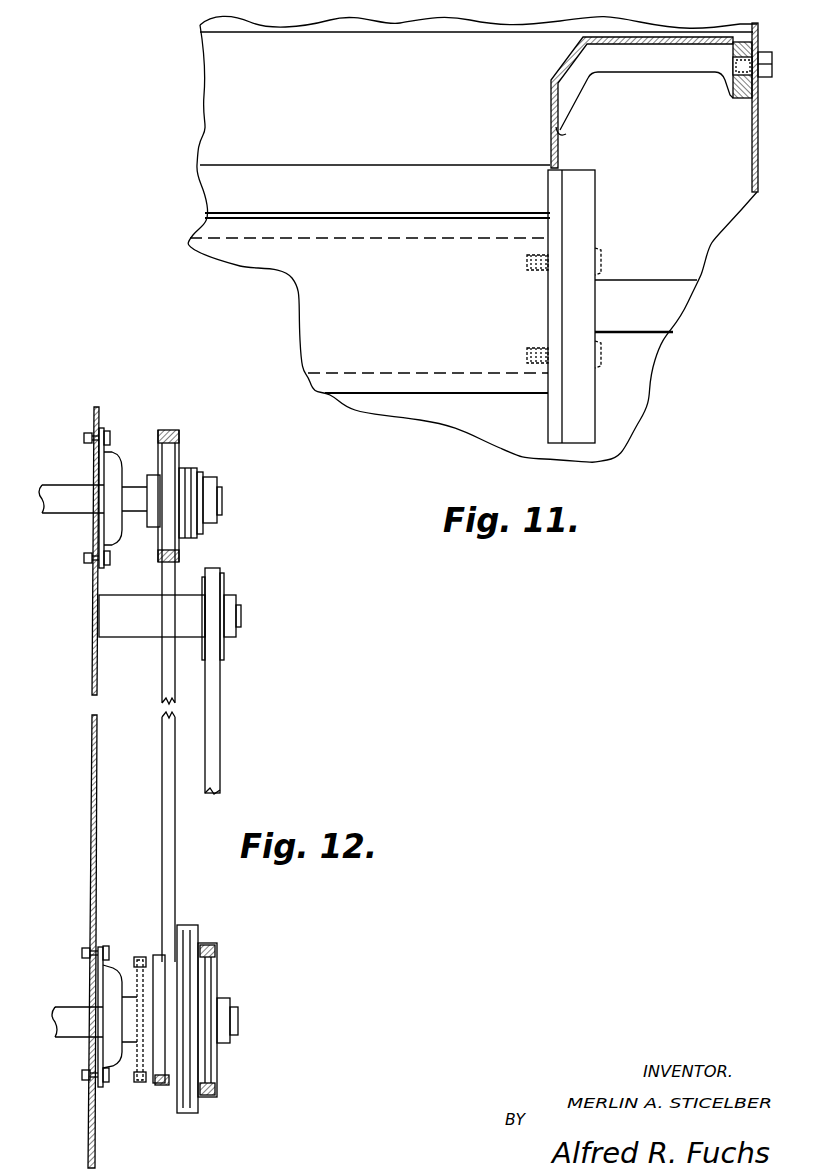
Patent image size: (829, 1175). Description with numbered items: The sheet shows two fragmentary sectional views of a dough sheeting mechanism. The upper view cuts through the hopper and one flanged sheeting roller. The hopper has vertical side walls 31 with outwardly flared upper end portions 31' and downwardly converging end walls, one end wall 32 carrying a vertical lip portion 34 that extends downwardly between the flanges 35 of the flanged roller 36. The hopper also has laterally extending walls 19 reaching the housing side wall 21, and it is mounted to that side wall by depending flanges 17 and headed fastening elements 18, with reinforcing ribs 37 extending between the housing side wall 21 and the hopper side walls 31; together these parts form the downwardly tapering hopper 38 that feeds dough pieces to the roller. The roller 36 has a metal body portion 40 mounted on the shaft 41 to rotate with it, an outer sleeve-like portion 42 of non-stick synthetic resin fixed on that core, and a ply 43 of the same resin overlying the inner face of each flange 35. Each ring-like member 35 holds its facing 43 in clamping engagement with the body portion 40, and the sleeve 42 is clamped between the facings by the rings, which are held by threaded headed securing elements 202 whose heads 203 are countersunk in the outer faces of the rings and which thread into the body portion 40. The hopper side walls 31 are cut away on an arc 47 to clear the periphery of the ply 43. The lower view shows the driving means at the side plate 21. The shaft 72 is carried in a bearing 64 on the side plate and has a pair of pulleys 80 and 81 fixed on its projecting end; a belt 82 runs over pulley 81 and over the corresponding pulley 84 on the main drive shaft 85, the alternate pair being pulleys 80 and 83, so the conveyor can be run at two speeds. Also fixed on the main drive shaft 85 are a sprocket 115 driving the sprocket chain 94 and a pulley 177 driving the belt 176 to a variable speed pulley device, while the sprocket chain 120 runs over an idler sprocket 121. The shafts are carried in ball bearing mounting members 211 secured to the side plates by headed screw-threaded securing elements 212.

In FIG. 11, the depending flange 17 is at (733, 96).
In FIG. 11, the headed fastening element 18 is at (760, 50).
In FIG. 11, the laterally extending wall 19 is at (637, 45).
In FIG. 11, the side wall 21 is at (752, 135).
In FIG. 12, the side wall 21 is at (93, 622).
In FIG. 11, the vertical side wall 31 is at (642, 102).
In FIG. 11, the outwardly flared upper end portion 31' is at (538, 60).
In FIG. 11, the downwardly converging end wall 32 is at (218, 128).
In FIG. 11, the vertical lip portion 34 is at (210, 190).
In FIG. 11, the flange 35 is at (585, 226).
In FIG. 11, the flanged roller 36 is at (540, 290).
In FIG. 11, the reinforcing rib 37 is at (666, 68).
In FIG. 11, the downwardly tapering hopper 38 is at (200, 29).
In FIG. 11, the metal body portion 40 is at (335, 375).
In FIG. 11, the shaft 41 is at (640, 285).
In FIG. 11, the sleeve-like portion 42 is at (378, 383).
In FIG. 11, the ply 43 is at (555, 218).
In FIG. 11, the arc 47 is at (560, 158).
In FIG. 11, the threaded headed securing element 202 is at (592, 236).
In FIG. 11, the head 203 is at (596, 270).
In FIG. 12, the bearing 64 is at (108, 463).
In FIG. 12, the shaft 72 is at (68, 507).
In FIG. 12, the pulley 80 is at (200, 470).
In FIG. 12, the pulley 81 is at (165, 440).
In FIG. 12, the belt 82 is at (163, 880).
In FIG. 12, the pulley 83 is at (195, 925).
In FIG. 12, the pulley 84 is at (160, 1090).
In FIG. 12, the main drive shaft 85 is at (75, 1030).
In FIG. 12, the sprocket chain 94 is at (143, 1080).
In FIG. 12, the sprocket 115 is at (137, 975).
In FIG. 12, the sprocket chain 120 is at (224, 577).
In FIG. 12, the idler sprocket 121 is at (218, 690).
In FIG. 12, the belt 176 is at (215, 940).
In FIG. 12, the pulley 177 is at (217, 965).
In FIG. 12, the ball bearing mounting member 211 is at (103, 428).
In FIG. 12, the headed screw-threaded securing element 212 is at (84, 438).